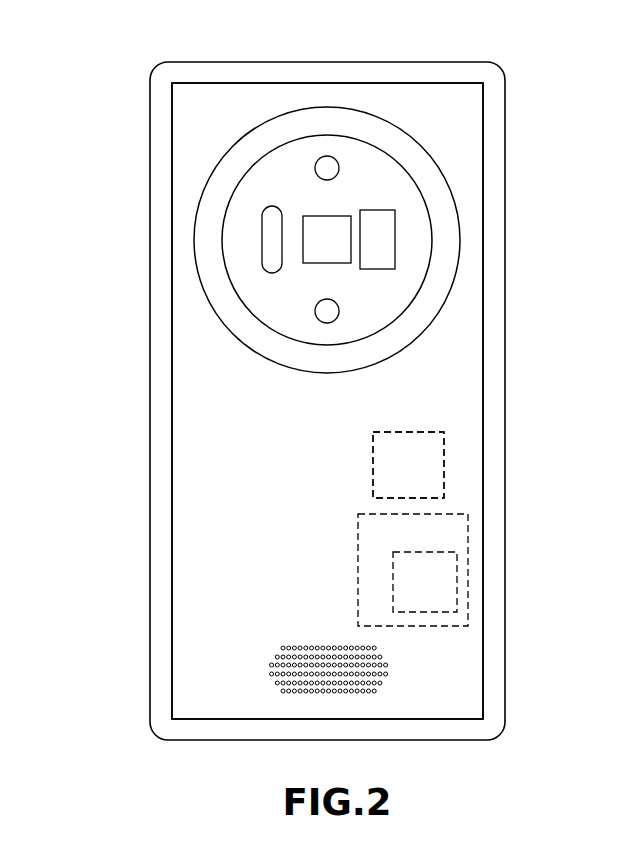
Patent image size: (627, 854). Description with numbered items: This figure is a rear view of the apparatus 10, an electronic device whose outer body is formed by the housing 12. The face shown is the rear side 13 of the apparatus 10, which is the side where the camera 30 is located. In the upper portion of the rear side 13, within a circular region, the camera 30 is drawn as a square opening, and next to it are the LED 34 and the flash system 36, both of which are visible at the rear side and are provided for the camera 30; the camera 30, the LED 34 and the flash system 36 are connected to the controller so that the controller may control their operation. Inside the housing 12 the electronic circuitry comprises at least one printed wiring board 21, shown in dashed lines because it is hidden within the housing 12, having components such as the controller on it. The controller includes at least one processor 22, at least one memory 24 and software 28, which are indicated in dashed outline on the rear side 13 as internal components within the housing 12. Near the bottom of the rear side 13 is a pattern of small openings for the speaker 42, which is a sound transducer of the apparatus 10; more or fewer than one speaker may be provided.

The apparatus 10 is at (528, 105).
The housing 12 is at (490, 298).
The rear side 13 is at (468, 383).
The printed wiring board 21 is at (455, 477).
The processor 22 is at (445, 450).
The memory 24 is at (468, 537).
The software 28 is at (442, 587).
The camera 30 is at (323, 225).
The LED 34 is at (318, 160).
The flash system 36 is at (268, 228).
The speaker 42 is at (358, 675).